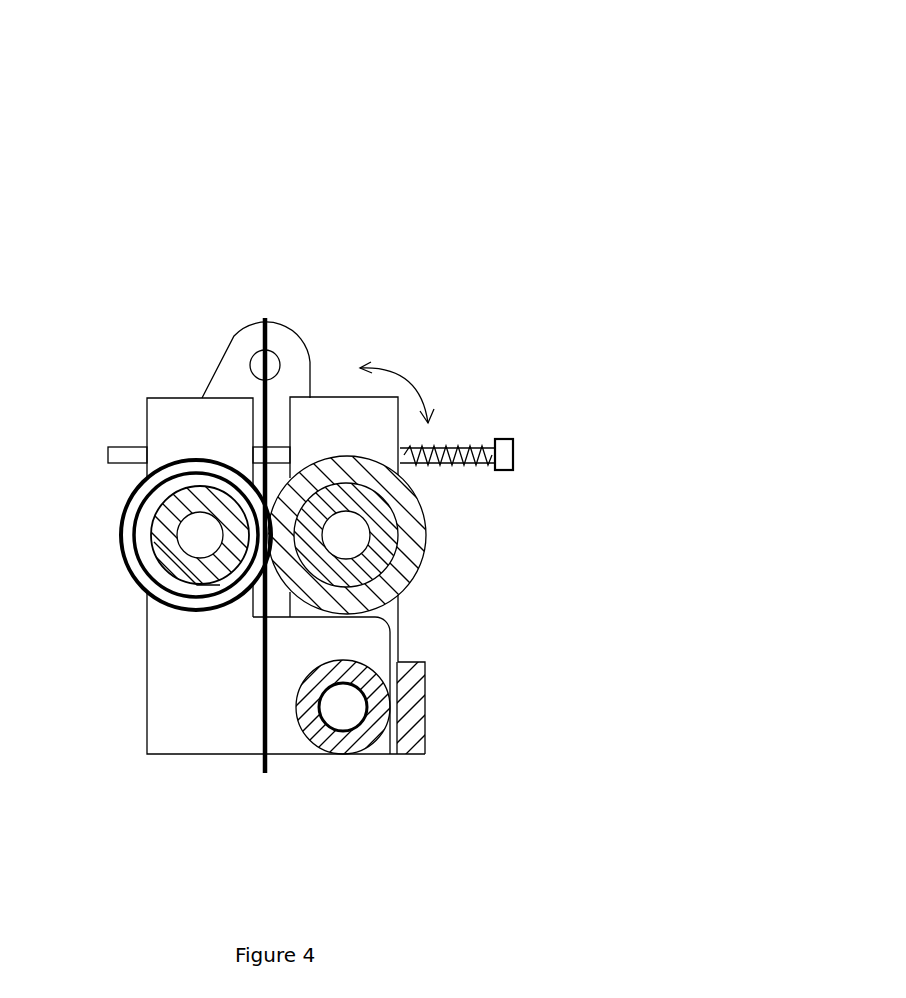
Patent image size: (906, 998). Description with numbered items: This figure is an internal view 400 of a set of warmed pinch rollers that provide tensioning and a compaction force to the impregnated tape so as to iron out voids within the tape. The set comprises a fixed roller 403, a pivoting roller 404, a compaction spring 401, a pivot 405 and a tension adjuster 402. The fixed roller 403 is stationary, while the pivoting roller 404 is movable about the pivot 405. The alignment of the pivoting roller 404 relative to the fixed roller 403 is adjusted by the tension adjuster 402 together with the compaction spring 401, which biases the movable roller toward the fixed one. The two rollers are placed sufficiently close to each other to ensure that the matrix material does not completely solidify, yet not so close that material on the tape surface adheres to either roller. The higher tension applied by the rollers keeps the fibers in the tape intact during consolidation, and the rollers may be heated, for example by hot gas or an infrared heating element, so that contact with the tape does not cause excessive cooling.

The internal view 400 is at (470, 93).
The compaction spring 401 is at (438, 447).
The tension adjuster 402 is at (510, 438).
The fixed roller 403 is at (122, 550).
The pivoting roller 404 is at (412, 578).
The pivot 405 is at (350, 730).